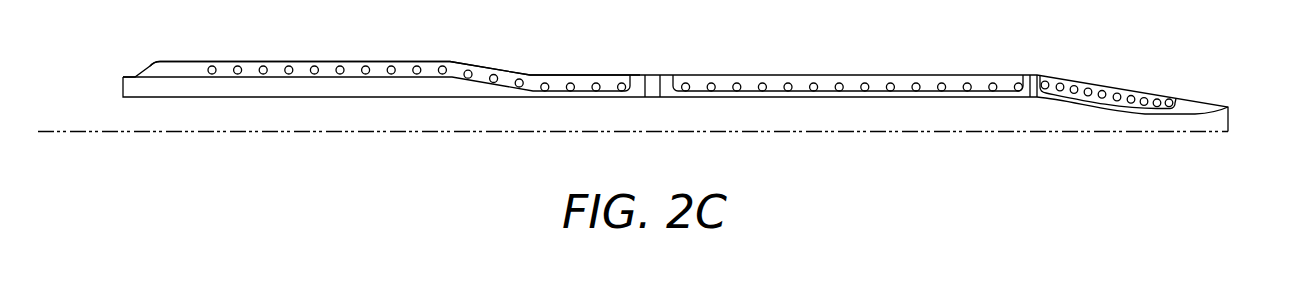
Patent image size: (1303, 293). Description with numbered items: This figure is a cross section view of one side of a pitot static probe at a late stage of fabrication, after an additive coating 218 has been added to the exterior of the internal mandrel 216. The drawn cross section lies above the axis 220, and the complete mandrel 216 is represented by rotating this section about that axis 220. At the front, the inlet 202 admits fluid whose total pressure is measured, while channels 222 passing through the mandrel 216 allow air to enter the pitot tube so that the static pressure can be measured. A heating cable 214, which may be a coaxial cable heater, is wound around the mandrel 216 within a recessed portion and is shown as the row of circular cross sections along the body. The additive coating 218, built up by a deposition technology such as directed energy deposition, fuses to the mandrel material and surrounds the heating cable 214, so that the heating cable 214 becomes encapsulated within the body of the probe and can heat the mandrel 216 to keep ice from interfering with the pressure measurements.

The inlet 202 is at (1207, 100).
The heating cable 214 is at (212, 66).
The internal mandrel 216 is at (123, 88).
The additive coating 218 is at (333, 60).
The axis 220 is at (112, 132).
The channels 222 is at (652, 75).